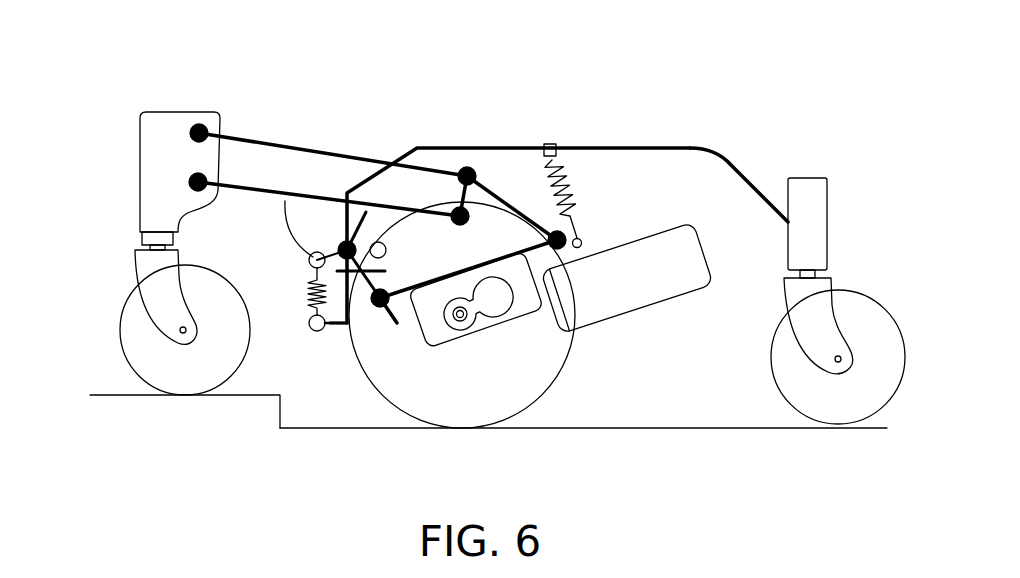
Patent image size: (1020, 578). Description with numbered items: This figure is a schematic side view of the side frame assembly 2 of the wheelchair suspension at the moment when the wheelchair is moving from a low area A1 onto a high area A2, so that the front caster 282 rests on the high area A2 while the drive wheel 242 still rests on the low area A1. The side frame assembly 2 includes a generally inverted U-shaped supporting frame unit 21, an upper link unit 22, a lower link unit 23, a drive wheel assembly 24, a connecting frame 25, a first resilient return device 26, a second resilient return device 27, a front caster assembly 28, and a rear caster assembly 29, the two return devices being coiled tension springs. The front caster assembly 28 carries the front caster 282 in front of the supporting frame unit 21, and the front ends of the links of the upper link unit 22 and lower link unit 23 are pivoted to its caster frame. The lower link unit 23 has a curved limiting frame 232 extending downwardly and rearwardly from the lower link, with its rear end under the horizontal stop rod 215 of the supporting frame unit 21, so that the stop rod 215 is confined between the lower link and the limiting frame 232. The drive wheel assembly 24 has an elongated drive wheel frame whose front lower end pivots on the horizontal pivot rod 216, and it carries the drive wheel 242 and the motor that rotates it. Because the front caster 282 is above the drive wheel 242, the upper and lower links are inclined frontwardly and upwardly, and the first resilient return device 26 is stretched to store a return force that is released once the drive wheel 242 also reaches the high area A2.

The side frame assembly 2 is at (536, 165).
The supporting frame unit 21 is at (445, 136).
The upper link unit 22 is at (308, 136).
The lower link unit 23 is at (243, 173).
The drive wheel assembly 24 is at (531, 352).
The connecting frame 25 is at (524, 192).
The first resilient return device 26 is at (596, 189).
The second resilient return device 27 is at (292, 345).
The front caster assembly 28 is at (149, 249).
The rear caster assembly 29 is at (845, 235).
The horizontal stop rod 215 is at (386, 252).
The horizontal pivot rod 216 is at (384, 310).
The curved limiting frame 232 is at (340, 276).
The drive wheel 242 is at (402, 412).
The front caster 282 is at (121, 323).
The low area A1 is at (733, 430).
The high area A2 is at (131, 397).